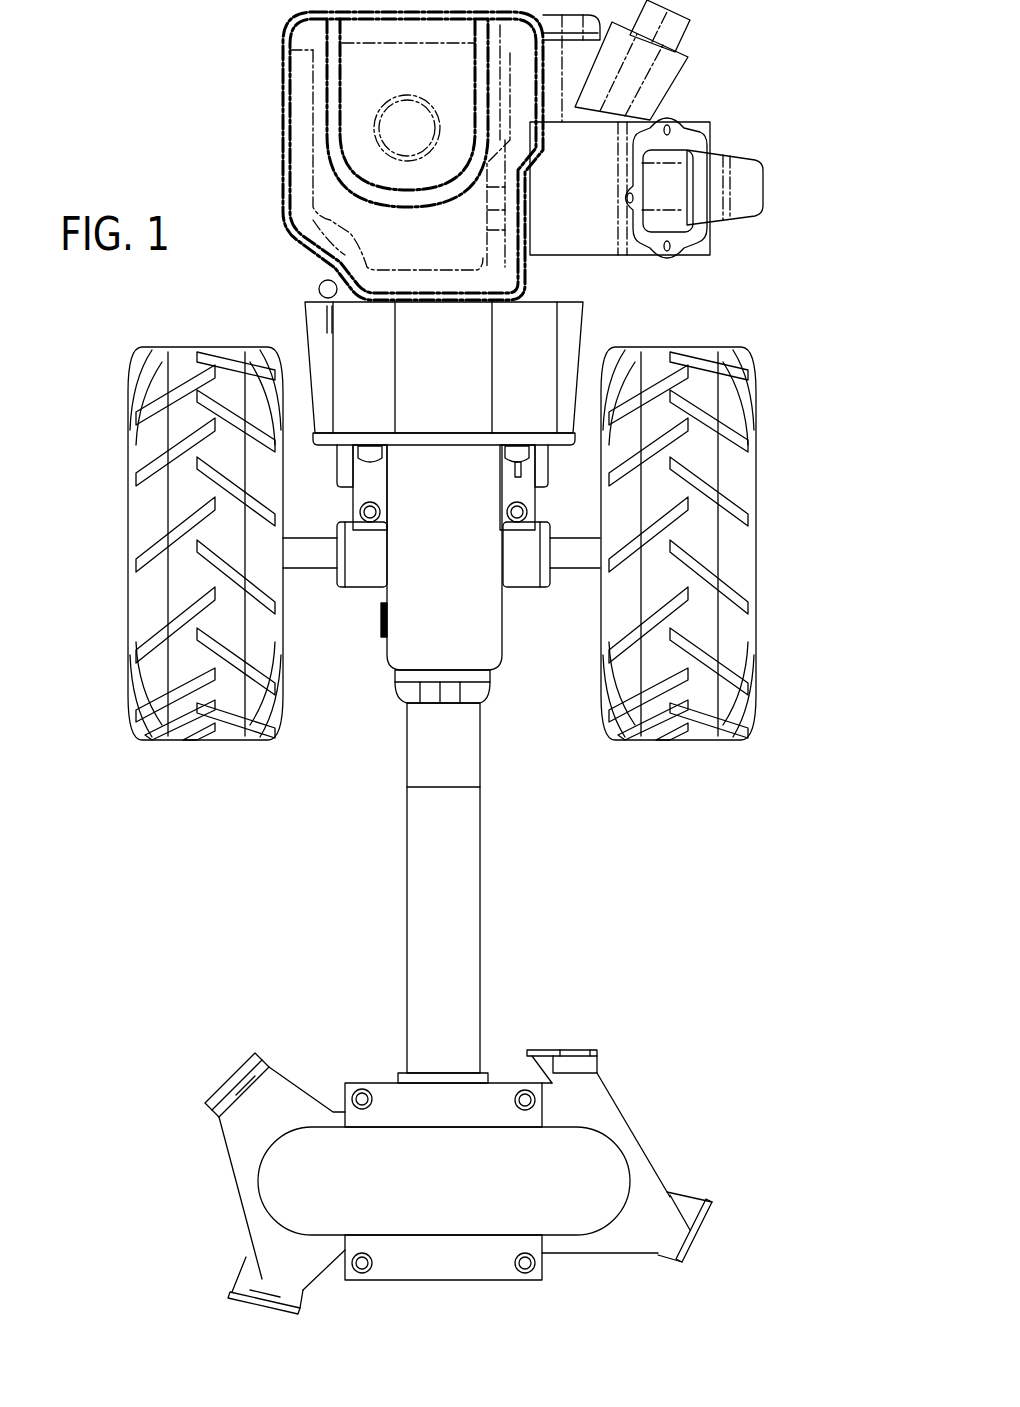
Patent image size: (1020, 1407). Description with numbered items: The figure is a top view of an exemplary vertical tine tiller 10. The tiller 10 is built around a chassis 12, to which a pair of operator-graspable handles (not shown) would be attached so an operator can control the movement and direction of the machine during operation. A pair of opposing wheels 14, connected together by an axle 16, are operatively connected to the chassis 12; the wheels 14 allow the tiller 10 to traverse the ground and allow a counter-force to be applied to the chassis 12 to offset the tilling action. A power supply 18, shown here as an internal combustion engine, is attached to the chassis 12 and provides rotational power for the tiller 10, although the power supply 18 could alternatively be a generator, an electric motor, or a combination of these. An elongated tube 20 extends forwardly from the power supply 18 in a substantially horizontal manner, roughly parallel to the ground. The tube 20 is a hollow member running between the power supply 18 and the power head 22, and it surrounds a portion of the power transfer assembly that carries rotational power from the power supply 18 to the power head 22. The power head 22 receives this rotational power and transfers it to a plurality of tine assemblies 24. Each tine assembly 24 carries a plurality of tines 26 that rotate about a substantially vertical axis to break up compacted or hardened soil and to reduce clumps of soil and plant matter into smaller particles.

The vertical tine tiller 10 is at (792, 100).
The chassis 12 is at (343, 462).
The wheels 14 is at (142, 620).
The axle 16 is at (570, 556).
The power supply 18 is at (300, 113).
The elongated tube 20 is at (440, 887).
The power head 22 is at (416, 1262).
The tine assembly 24 is at (196, 1214).
The tines 26 is at (268, 1085).